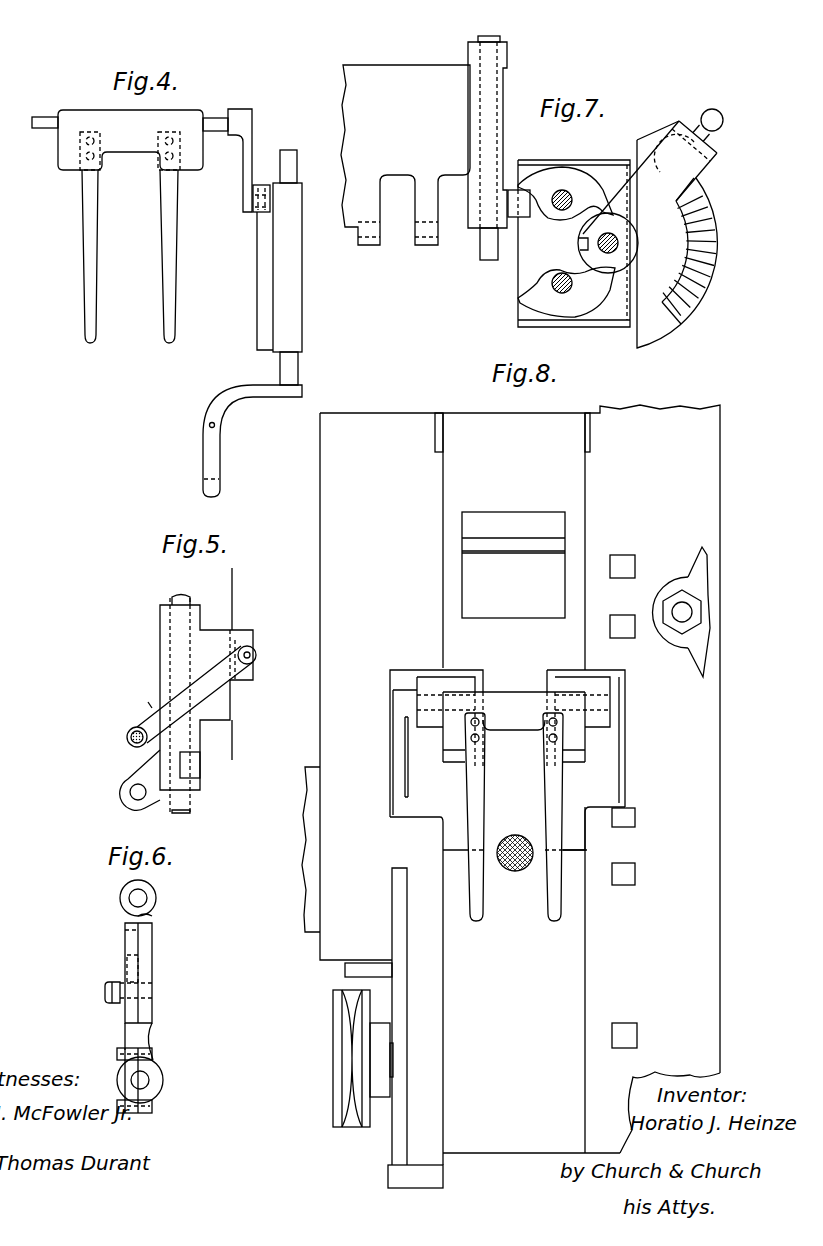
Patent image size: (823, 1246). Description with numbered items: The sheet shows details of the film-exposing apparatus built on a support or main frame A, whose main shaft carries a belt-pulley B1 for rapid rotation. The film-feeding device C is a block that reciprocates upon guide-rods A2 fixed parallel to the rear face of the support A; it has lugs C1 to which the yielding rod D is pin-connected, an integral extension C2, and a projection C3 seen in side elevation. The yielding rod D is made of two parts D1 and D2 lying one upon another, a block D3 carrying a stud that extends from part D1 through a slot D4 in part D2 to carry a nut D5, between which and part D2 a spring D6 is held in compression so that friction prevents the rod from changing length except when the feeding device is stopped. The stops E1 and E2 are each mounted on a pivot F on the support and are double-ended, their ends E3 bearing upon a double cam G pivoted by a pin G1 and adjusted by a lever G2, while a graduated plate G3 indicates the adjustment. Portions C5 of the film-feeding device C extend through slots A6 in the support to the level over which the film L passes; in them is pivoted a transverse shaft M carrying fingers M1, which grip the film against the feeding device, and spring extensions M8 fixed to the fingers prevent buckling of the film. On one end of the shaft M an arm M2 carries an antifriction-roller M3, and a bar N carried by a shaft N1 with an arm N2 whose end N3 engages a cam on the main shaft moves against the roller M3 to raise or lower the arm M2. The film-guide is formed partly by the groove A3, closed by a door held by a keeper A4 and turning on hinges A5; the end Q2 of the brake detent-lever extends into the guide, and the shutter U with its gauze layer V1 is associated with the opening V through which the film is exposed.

In FIG. 4, the transverse shaft M is at (223, 127).
In FIG. 4, the fingers M1 is at (72, 165).
In FIG. 5, the fingers M1 is at (237, 693).
In FIG. 8, the fingers M1 is at (443, 752).
In FIG. 4, the arm M2 is at (248, 140).
In FIG. 5, the arm M2 is at (257, 660).
In FIG. 4, the antifriction-roller M3 is at (258, 214).
In FIG. 5, the antifriction-roller M3 is at (127, 737).
In FIG. 4, the spring extensions M8 is at (160, 240).
In FIG. 8, the spring extensions M8 is at (542, 787).
In FIG. 4, the bar N is at (262, 286).
In FIG. 4, the shaft N1 is at (290, 172).
In FIG. 4, the arm N2 is at (233, 398).
In FIG. 8, the arm N2 is at (345, 970).
In FIG. 4, the end of arm N3 is at (220, 485).
In FIG. 8, the support or main frame A is at (511, 785).
In FIG. 5, the guide-rods A2 is at (172, 598).
In FIG. 7, the guide-rods A2 is at (493, 92).
In FIG. 8, the groove A3 is at (578, 532).
In FIG. 8, the keeper A4 is at (407, 885).
In FIG. 8, the hinges A5 is at (633, 818).
In FIG. 8, the slots A6 is at (390, 778).
In FIG. 8, the belt-pulley B1 is at (340, 1052).
In FIG. 5, the film-feeding device C is at (206, 697).
In FIG. 7, the film-feeding device C is at (405, 155).
In FIG. 8, the film-feeding device C is at (617, 715).
In FIG. 5, the lugs C1 is at (122, 788).
In FIG. 7, the lugs C1 is at (418, 204).
In FIG. 5, the extension C2 is at (200, 765).
In FIG. 7, the extension C2 is at (525, 217).
In FIG. 5, the projection C3 is at (213, 638).
In FIG. 8, the portions of film-feeding device C5 is at (447, 762).
In FIG. 6, the yielding rod D is at (152, 1000).
In FIG. 6, the first part of yielding rod D1 is at (147, 927).
In FIG. 6, the second part of yielding rod D2 is at (125, 1040).
In FIG. 6, the block D3 is at (126, 940).
In FIG. 6, the slot D4 is at (138, 947).
In FIG. 6, the nut D5 is at (106, 995).
In FIG. 6, the spring D6 is at (127, 965).
In FIG. 7, the stop E1 is at (537, 173).
In FIG. 7, the stop E2 is at (548, 270).
In FIG. 7, the ends of stops E3 is at (605, 205).
In FIG. 7, the pivot F is at (560, 277).
In FIG. 7, the gear disk G is at (633, 238).
In FIG. 7, the pin G1 is at (615, 247).
In FIG. 7, the lever G2 is at (653, 171).
In FIG. 7, the graduated plate G3 is at (677, 234).
In FIG. 5, the film L is at (232, 583).
In FIG. 8, the end of detent-lever Q2 is at (515, 871).
In FIG. 8, the shutter U is at (682, 612).
In FIG. 8, the opening V is at (513, 565).
In FIG. 8, the strip V1 is at (502, 548).